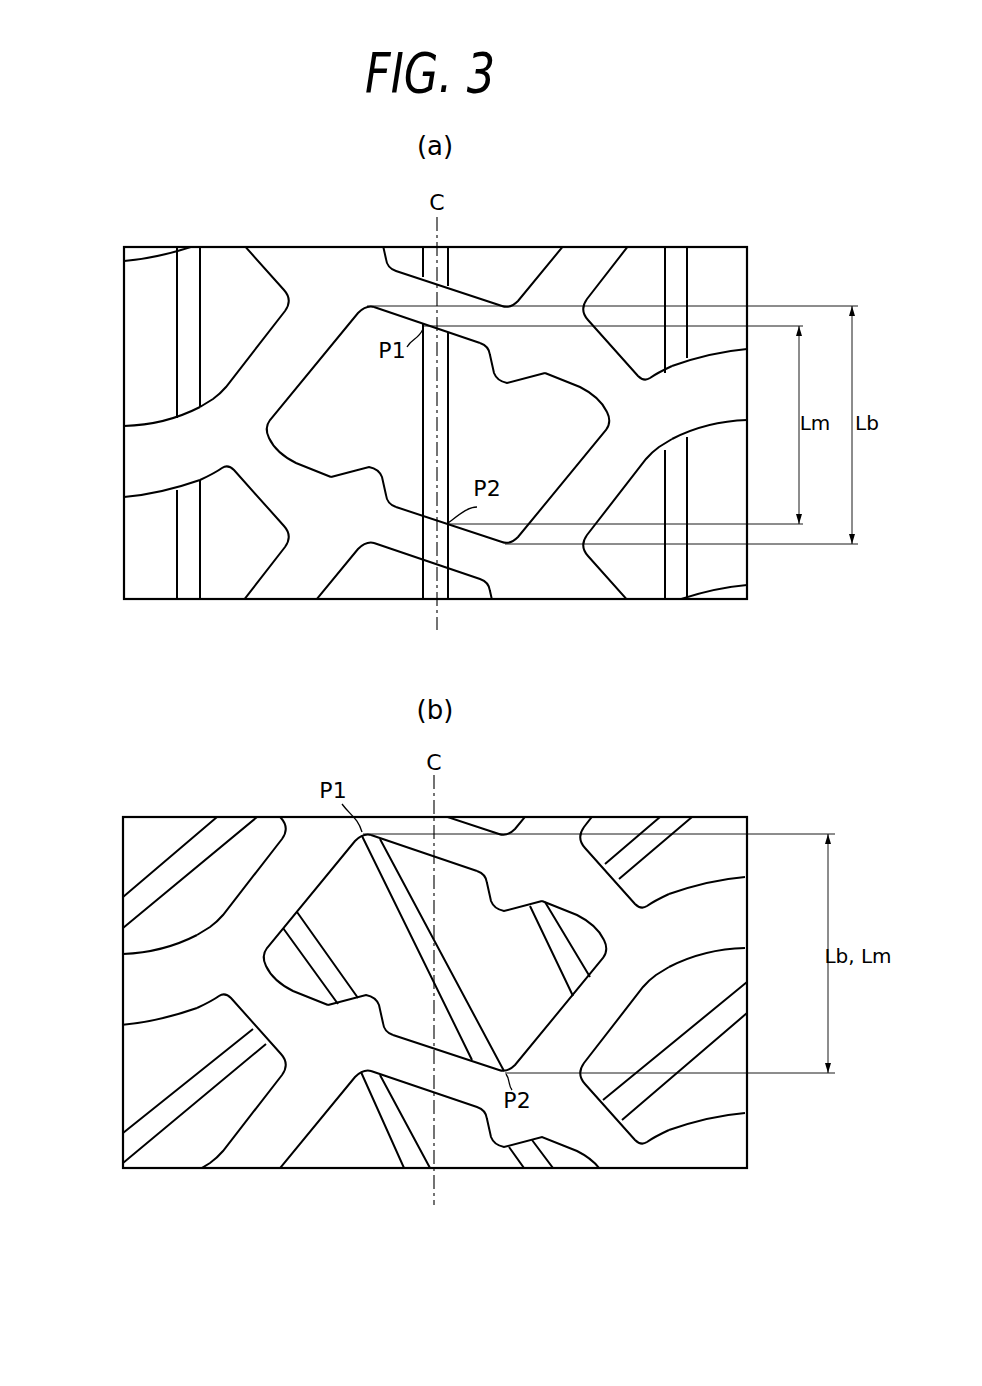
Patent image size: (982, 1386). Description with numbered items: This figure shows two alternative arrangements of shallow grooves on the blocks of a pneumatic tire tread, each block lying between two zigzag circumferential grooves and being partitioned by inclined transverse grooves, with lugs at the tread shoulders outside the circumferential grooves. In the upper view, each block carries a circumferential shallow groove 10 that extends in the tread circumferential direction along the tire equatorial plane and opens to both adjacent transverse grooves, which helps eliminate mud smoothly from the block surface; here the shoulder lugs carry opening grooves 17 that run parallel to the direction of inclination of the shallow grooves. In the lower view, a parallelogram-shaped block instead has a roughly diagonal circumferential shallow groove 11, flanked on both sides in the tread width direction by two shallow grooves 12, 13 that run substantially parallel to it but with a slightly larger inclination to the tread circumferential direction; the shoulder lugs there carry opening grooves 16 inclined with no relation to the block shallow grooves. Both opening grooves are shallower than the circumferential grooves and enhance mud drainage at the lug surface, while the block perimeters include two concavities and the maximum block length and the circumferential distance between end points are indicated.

The circumferential shallow groove 10 is at (445, 437).
The circumferential shallow groove 11 is at (467, 1017).
The shallow groove 12 is at (545, 941).
The shallow groove 13 is at (323, 953).
The opening groove 16 is at (672, 825).
The opening groove 17 is at (188, 282).